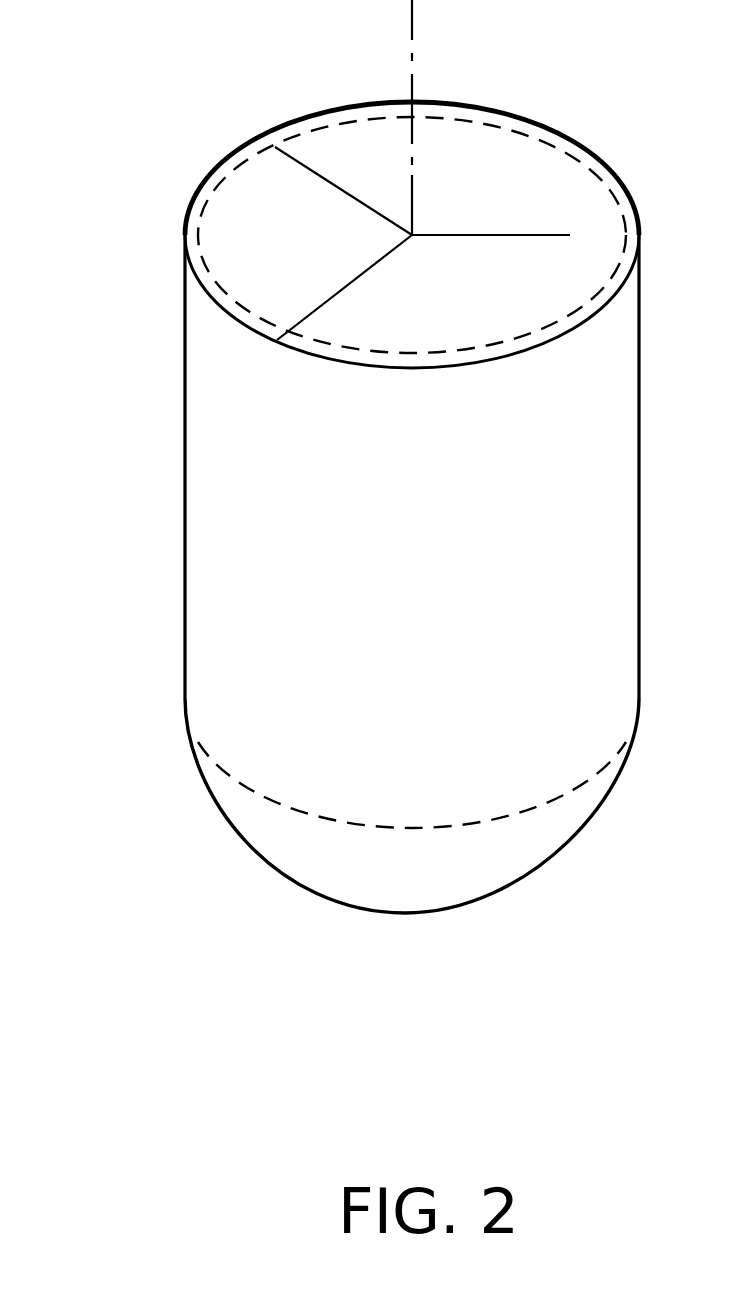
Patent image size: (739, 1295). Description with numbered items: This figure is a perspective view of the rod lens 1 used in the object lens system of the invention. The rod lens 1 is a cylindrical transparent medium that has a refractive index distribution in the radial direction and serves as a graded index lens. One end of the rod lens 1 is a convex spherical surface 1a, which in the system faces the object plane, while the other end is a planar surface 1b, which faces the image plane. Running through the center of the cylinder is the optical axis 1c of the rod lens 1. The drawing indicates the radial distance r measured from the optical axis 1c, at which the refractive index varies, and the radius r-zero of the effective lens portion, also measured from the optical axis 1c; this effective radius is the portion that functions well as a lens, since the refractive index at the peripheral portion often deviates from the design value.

The rod lens 1 is at (230, 483).
The convex spherical surface 1a is at (360, 911).
The planar surface 1b is at (470, 193).
The optical axis 1c is at (413, 82).